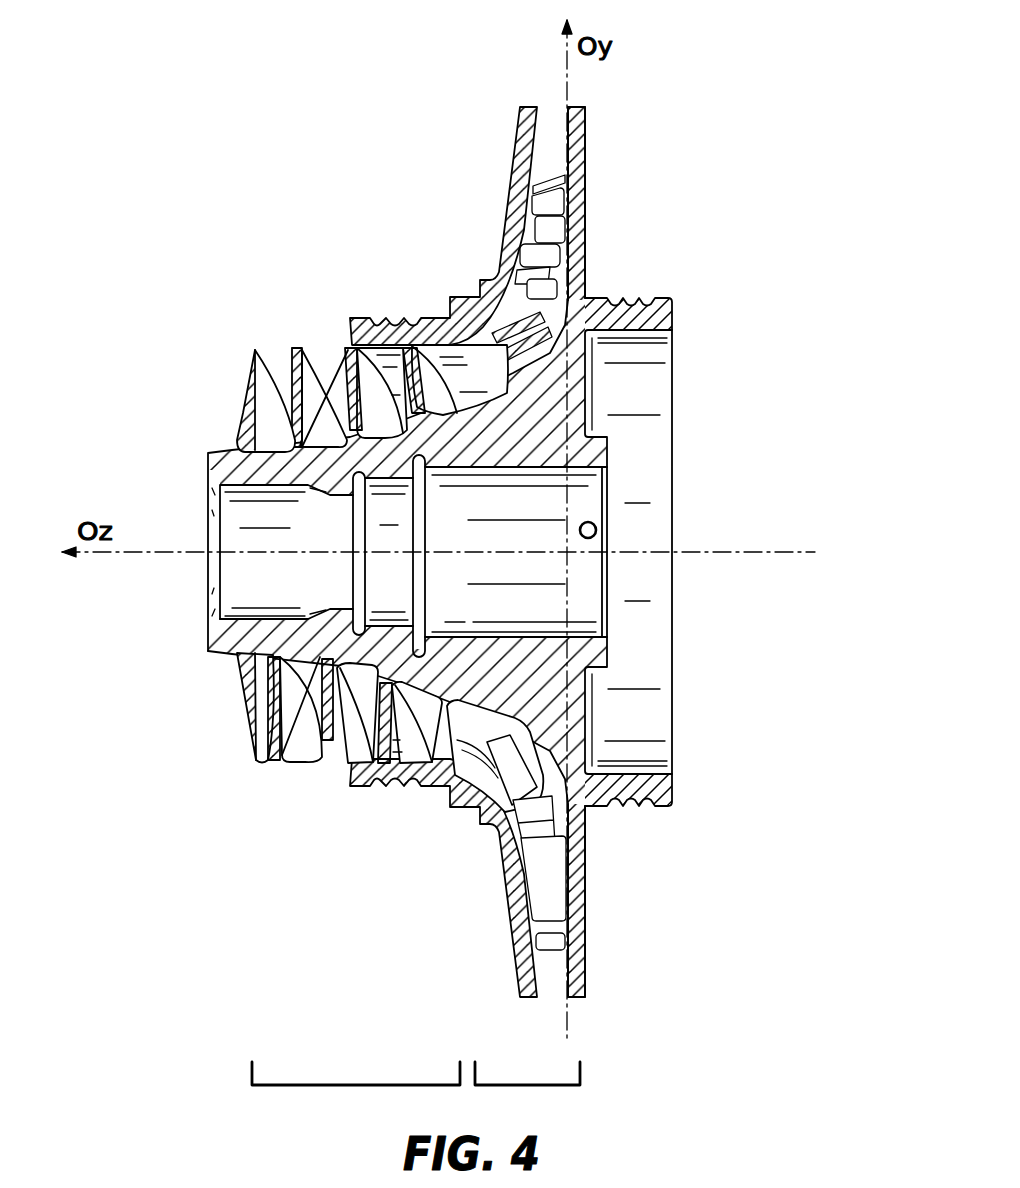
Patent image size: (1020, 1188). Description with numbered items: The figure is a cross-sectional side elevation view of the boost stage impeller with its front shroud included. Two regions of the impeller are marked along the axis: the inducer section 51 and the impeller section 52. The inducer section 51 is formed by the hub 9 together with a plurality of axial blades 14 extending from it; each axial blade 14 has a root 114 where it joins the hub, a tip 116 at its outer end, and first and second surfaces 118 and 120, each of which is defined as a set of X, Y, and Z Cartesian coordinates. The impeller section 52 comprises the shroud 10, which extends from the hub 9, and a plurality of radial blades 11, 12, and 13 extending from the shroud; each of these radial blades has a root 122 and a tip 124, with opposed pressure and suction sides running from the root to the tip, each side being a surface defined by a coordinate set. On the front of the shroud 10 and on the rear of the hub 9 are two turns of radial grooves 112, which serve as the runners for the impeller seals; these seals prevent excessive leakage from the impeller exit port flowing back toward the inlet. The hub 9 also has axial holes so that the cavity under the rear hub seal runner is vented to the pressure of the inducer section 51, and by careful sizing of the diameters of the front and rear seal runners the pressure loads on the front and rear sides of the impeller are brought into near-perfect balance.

The hub 9 is at (589, 160).
The shroud 10 is at (498, 238).
The radial blade 11 is at (560, 252).
The radial blade 12 is at (560, 182).
The radial blade 13 is at (553, 212).
The axial blade 14 is at (290, 345).
The radial grooves 112 is at (387, 813).
The root 114 is at (318, 370).
The tip 116 is at (297, 345).
The first surface 118 is at (290, 355).
The second surface 120 is at (322, 345).
The root 122 is at (563, 925).
The tip 124 is at (530, 930).
The inducer section 51 is at (356, 1093).
The impeller section 52 is at (532, 1093).